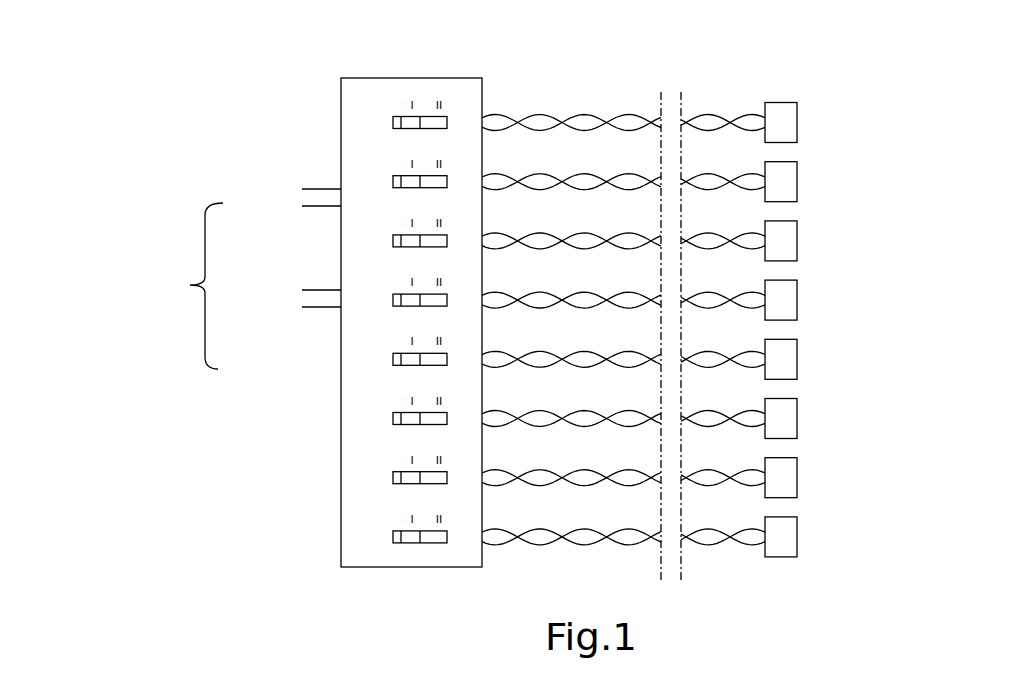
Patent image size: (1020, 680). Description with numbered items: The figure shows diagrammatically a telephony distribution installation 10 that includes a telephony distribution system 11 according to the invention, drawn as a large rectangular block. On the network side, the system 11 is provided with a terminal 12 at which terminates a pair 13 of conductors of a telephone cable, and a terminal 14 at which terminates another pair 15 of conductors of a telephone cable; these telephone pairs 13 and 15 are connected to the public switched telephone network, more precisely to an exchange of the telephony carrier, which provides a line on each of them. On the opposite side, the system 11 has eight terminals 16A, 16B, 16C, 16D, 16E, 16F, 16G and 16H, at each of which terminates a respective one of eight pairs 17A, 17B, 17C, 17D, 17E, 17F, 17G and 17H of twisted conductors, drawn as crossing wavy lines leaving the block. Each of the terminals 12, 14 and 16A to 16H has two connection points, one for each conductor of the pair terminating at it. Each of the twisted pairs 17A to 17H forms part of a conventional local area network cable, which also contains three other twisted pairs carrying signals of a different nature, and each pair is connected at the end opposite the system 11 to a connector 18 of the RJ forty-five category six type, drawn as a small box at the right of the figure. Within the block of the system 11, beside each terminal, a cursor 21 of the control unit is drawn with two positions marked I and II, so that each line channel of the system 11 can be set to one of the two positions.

The installation 10 is at (323, 147).
The system 11 is at (341, 513).
The terminal 12 is at (333, 189).
The pair of conductors 13 is at (316, 202).
The terminal 14 is at (338, 292).
The pair of conductors 15 is at (316, 302).
The terminal 16A is at (492, 122).
The terminal 16B is at (492, 182).
The terminal 16C is at (492, 241).
The terminal 16D is at (492, 300).
The terminal 16E is at (492, 359).
The terminal 16F is at (492, 418).
The terminal 16G is at (492, 478).
The terminal 16H is at (492, 537).
The pair of twisted conductors 17A is at (580, 124).
The pair of twisted conductors 17B is at (580, 184).
The pair of twisted conductors 17C is at (580, 243).
The pair of twisted conductors 17D is at (580, 302).
The pair of twisted conductors 17E is at (580, 361).
The pair of twisted conductors 17F is at (580, 420).
The pair of twisted conductors 17G is at (580, 480).
The pair of twisted conductors 17H is at (580, 539).
The connector 18 is at (797, 124).
The cursor 21 is at (413, 126).